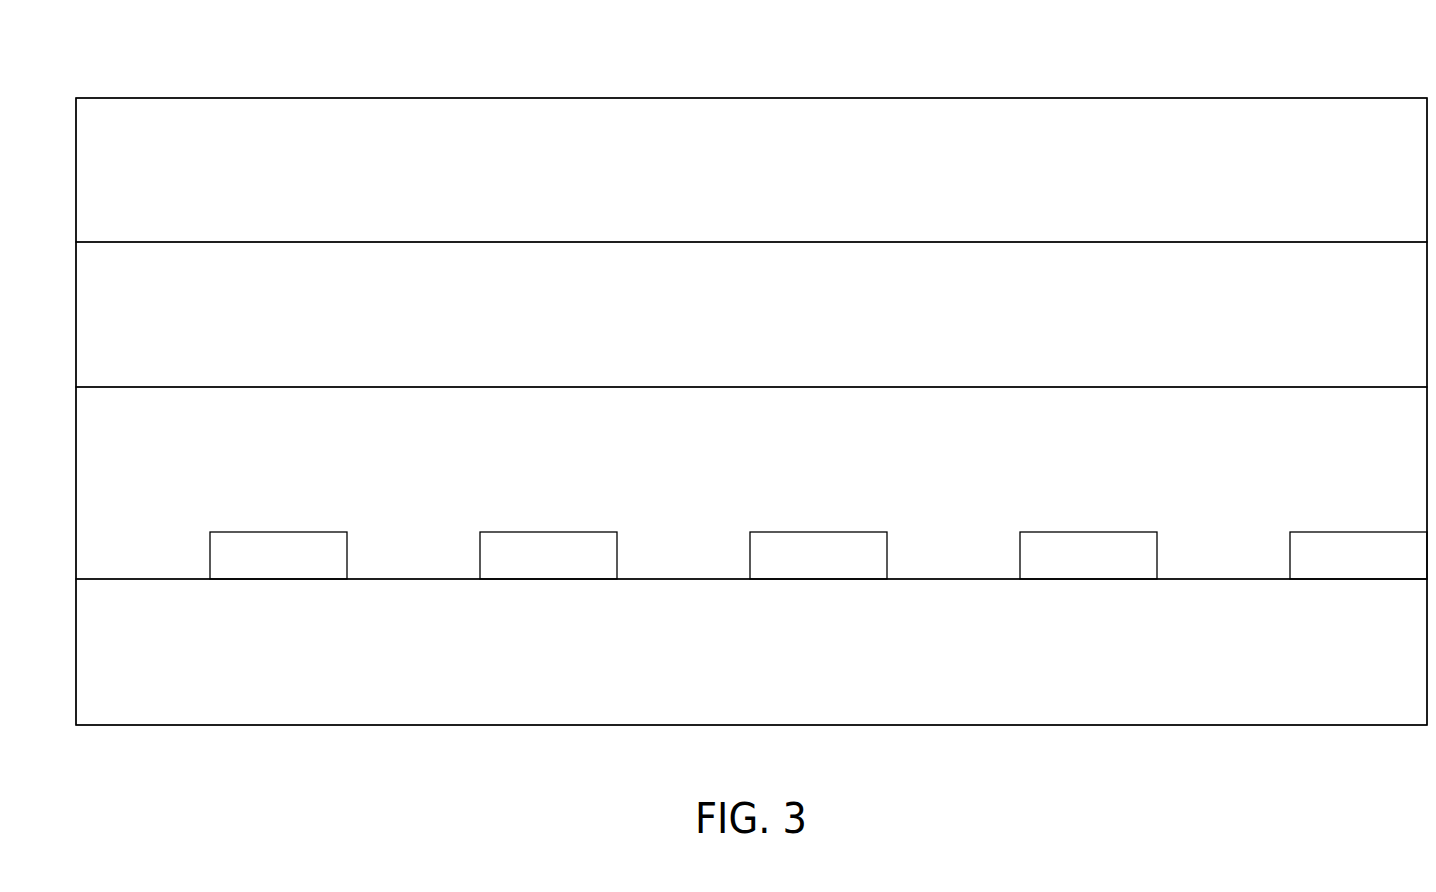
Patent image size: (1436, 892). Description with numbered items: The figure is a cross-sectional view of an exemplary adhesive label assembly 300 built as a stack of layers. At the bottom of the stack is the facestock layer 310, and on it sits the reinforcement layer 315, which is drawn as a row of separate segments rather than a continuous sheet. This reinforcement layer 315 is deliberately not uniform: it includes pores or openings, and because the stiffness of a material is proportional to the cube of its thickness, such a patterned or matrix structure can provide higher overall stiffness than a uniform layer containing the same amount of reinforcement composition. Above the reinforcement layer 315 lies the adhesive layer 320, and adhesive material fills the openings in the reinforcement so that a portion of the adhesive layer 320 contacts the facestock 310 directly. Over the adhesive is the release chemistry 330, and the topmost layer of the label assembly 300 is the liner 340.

The label assembly 300 is at (238, 83).
The facestock layer 310 is at (751, 652).
The reinforcement layer 315 is at (818, 557).
The adhesive layer 320 is at (751, 483).
The release chemistry 330 is at (751, 314).
The liner 340 is at (751, 170).